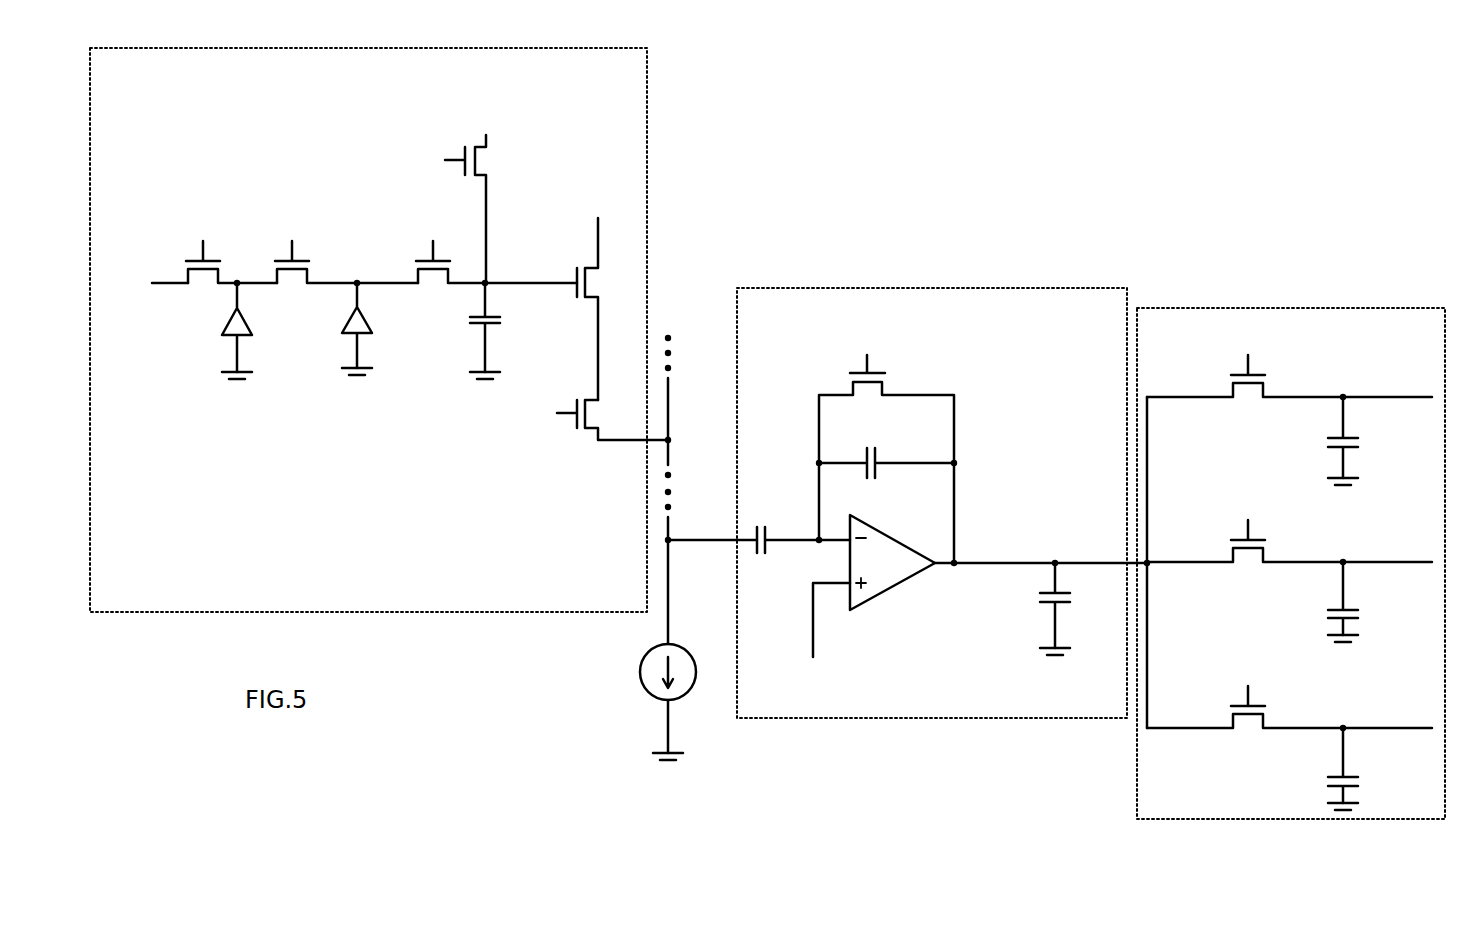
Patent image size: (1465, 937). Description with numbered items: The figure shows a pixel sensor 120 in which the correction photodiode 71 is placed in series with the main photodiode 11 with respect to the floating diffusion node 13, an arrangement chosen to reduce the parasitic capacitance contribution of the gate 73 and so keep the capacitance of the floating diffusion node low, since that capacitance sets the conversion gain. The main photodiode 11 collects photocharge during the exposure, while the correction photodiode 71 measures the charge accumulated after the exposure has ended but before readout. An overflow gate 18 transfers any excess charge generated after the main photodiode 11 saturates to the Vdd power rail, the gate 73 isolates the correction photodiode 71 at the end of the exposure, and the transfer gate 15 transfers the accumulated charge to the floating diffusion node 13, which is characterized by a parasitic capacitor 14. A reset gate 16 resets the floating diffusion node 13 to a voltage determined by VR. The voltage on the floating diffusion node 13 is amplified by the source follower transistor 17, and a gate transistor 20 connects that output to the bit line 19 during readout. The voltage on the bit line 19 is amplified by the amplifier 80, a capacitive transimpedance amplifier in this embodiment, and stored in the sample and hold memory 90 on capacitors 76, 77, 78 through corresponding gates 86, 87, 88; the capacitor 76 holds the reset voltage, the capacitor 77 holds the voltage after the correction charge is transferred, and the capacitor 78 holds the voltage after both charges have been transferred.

The main photodiode 11 is at (249, 327).
The floating diffusion node 13 is at (518, 275).
The parasitic capacitor 14 is at (500, 318).
The transfer gate 15 is at (294, 272).
The reset gate 16 is at (473, 155).
The source follower transistor 17 is at (585, 275).
The overflow gate 18 is at (207, 272).
The bit line 19 is at (668, 388).
The gate transistor 20 is at (588, 405).
The correction photodiode 71 is at (364, 328).
The gate 73 is at (445, 272).
The capacitor 76 is at (1350, 437).
The capacitor 77 is at (1350, 609).
The capacitor 78 is at (1350, 776).
The amplifier 80 is at (1052, 288).
The gate 86 is at (1258, 385).
The gate 87 is at (1258, 550).
The gate 88 is at (1258, 715).
The sample and hold memory 90 is at (1178, 308).
The pixel sensor 120 is at (647, 182).